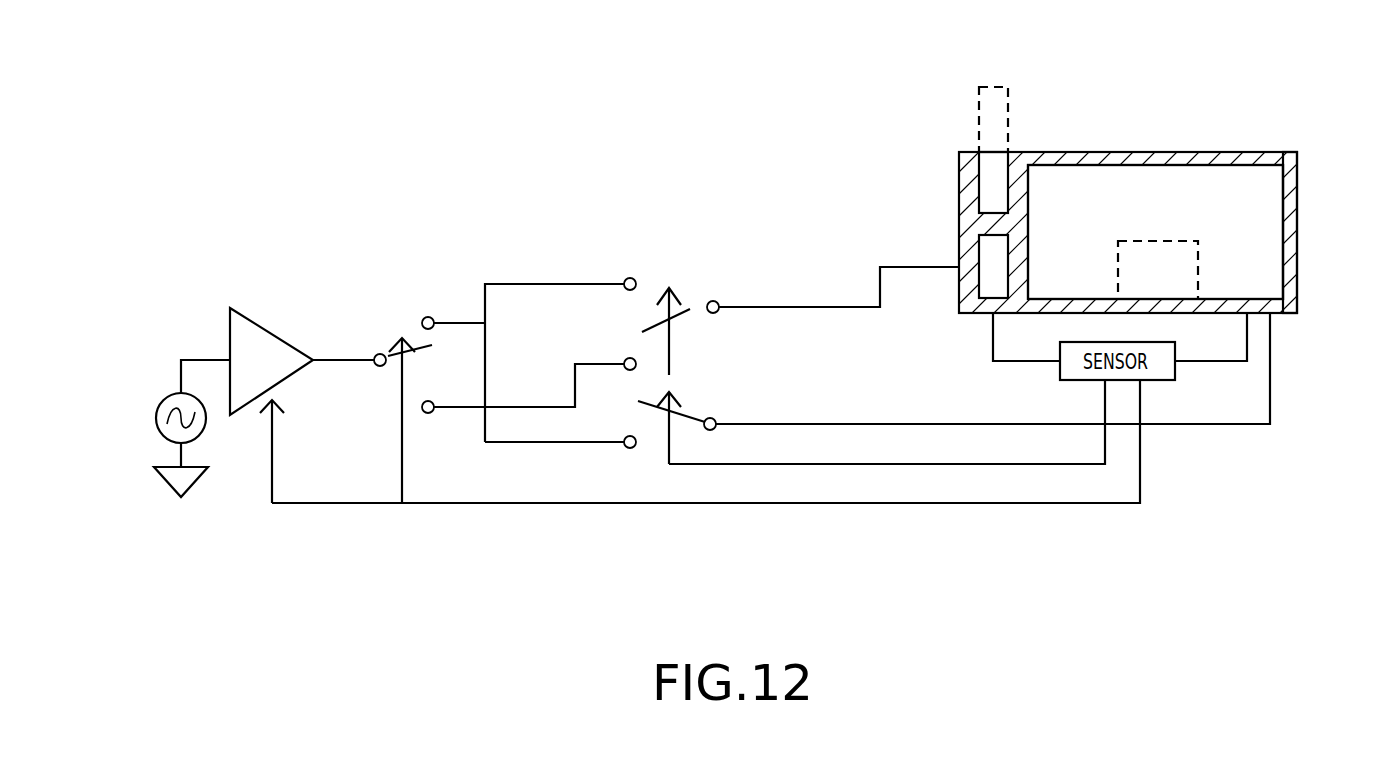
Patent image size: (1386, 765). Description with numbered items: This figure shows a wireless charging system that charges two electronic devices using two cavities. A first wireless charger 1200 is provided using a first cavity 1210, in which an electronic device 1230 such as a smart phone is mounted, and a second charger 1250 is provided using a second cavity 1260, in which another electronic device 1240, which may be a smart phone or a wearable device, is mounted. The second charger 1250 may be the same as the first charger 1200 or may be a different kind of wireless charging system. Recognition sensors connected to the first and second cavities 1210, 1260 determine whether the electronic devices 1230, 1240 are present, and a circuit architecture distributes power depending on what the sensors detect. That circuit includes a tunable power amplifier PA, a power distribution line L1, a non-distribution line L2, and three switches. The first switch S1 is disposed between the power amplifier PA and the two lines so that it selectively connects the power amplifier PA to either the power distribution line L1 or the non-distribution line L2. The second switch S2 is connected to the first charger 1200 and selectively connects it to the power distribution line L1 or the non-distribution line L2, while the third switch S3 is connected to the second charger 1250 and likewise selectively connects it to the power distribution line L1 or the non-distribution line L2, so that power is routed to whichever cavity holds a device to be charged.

The tunable power amplifier PA is at (278, 332).
The first switch S1 is at (417, 343).
The second switch S2 is at (648, 323).
The third switch S3 is at (645, 405).
The power distribution line L1 is at (556, 282).
The non-distribution line L2 is at (523, 408).
The first wireless charger 1200 is at (947, 158).
The first cavity 1210 is at (978, 243).
The electronic device 1230 is at (1002, 86).
The electronic device 1240 is at (1158, 241).
The second charger 1250 is at (1230, 133).
The second cavity 1260 is at (1090, 182).